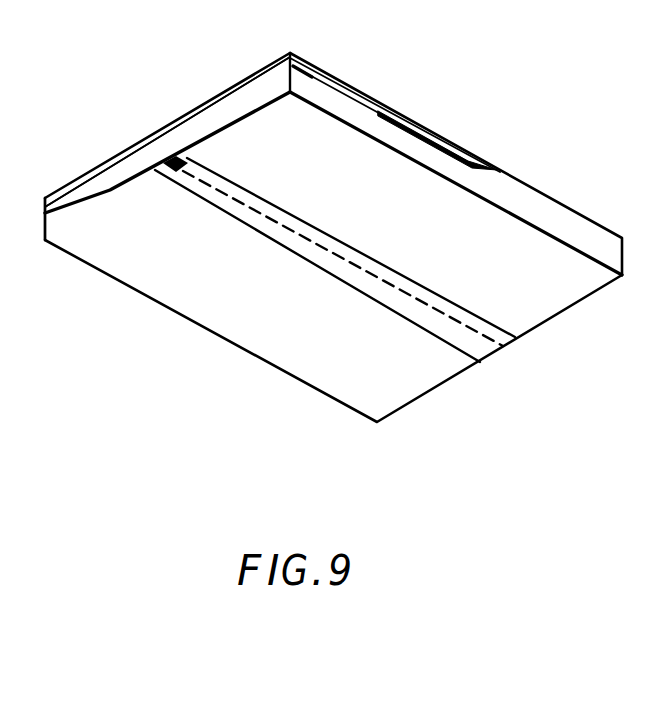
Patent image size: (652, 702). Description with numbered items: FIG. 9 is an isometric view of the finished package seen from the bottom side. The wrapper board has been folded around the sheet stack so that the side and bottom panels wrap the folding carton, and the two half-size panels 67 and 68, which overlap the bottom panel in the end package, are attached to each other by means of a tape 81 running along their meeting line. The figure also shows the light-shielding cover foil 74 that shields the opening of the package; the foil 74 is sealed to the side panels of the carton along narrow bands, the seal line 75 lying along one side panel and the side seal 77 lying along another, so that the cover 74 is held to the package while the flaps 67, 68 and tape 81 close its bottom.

The half-size panel 67 is at (277, 361).
The half-size panel 68 is at (515, 232).
The light-shielding cover foil 74 is at (230, 93).
The seal line 75 is at (150, 145).
The side seal line 77 is at (387, 111).
The tape 81 is at (504, 343).